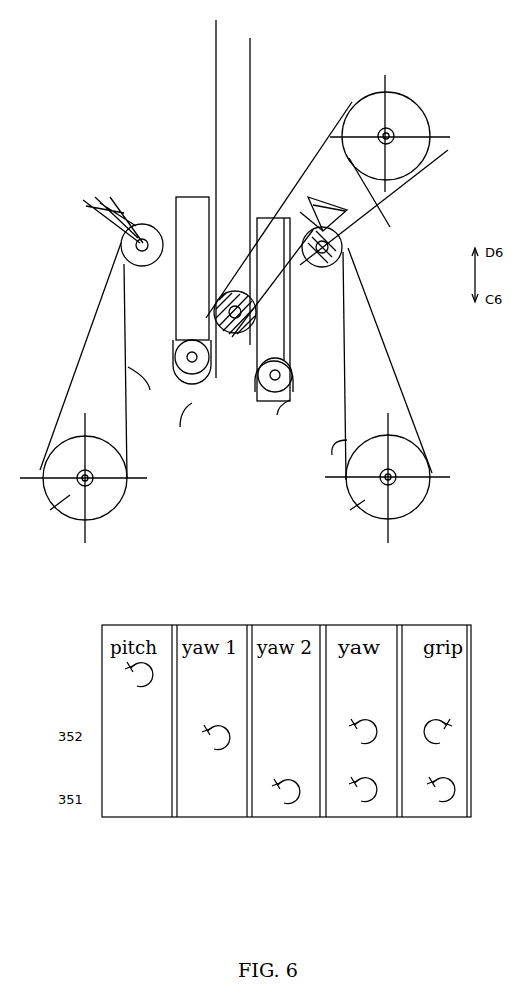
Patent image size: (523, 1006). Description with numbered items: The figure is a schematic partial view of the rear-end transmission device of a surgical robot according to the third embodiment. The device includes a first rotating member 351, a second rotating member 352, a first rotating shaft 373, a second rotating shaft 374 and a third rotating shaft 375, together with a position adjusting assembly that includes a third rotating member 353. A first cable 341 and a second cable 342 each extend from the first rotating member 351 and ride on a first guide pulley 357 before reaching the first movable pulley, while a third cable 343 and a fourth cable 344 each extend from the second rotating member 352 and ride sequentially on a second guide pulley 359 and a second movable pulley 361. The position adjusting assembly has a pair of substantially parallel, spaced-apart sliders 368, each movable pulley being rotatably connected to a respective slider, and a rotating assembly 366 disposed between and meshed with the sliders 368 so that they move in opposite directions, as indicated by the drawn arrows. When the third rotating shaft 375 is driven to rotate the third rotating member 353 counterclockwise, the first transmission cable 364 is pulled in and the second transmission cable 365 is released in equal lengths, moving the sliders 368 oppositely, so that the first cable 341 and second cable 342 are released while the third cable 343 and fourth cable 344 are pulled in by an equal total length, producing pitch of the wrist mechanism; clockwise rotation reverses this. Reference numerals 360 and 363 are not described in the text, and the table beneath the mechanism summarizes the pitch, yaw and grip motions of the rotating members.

The first cable 341 is at (400, 377).
The second cable 342 is at (325, 455).
The third cable 343 is at (146, 387).
The fourth cable 344 is at (74, 364).
The first rotating member 351 is at (370, 527).
The second rotating member 352 is at (67, 527).
The third rotating member 353 is at (105, 674).
The first guide pulley 357 is at (292, 304).
The second guide pulley 359 is at (142, 266).
The guide 360 is at (291, 328).
The second movable pulley 361 is at (176, 323).
The pulley 363 is at (425, 105).
The first transmission cable 364 is at (340, 243).
The second transmission cable 365 is at (276, 415).
The rotating assembly 366 is at (310, 162).
The sliders 368 is at (179, 423).
The first rotating shaft 373 is at (350, 510).
The second rotating shaft 374 is at (50, 510).
The third rotating shaft 375 is at (323, 222).